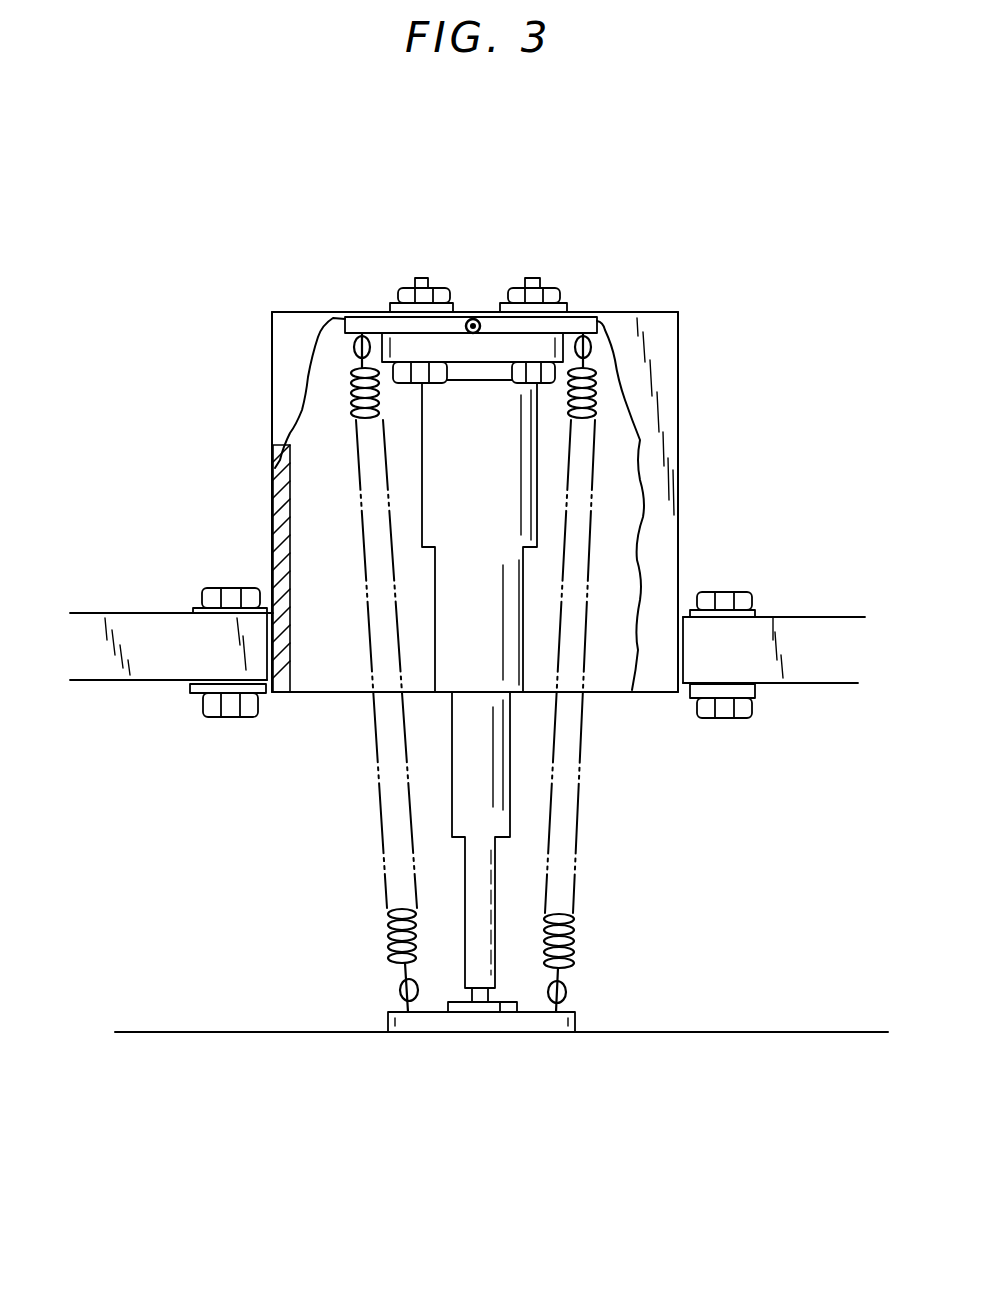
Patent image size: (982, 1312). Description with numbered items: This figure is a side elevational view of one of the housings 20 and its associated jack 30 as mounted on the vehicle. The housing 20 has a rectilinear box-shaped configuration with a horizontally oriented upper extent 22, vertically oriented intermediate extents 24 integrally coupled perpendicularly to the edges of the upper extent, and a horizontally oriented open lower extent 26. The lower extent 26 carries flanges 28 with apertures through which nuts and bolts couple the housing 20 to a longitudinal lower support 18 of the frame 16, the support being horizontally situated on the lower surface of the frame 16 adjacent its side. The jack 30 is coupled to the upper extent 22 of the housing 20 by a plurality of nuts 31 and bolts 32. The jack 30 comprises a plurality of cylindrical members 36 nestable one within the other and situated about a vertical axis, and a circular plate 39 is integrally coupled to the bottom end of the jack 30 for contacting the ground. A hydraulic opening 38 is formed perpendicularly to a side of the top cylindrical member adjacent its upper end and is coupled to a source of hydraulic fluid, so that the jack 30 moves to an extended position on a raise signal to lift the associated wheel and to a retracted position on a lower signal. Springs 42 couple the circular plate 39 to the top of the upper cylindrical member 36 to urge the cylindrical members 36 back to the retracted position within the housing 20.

The frame 16 is at (813, 637).
The longitudinal lower support 18 is at (137, 613).
The housing 20 is at (678, 360).
The upper extent 22 is at (607, 313).
The intermediate extent 24 is at (678, 515).
The lower extent 26 is at (327, 690).
The flange 28 is at (680, 693).
The jack 30 is at (497, 348).
The nut 31 is at (437, 288).
The bolt 32 is at (420, 287).
The cylindrical member 36 is at (445, 658).
The hydraulic opening 38 is at (473, 313).
The circular plate 39 is at (487, 1022).
The spring 42 is at (387, 925).